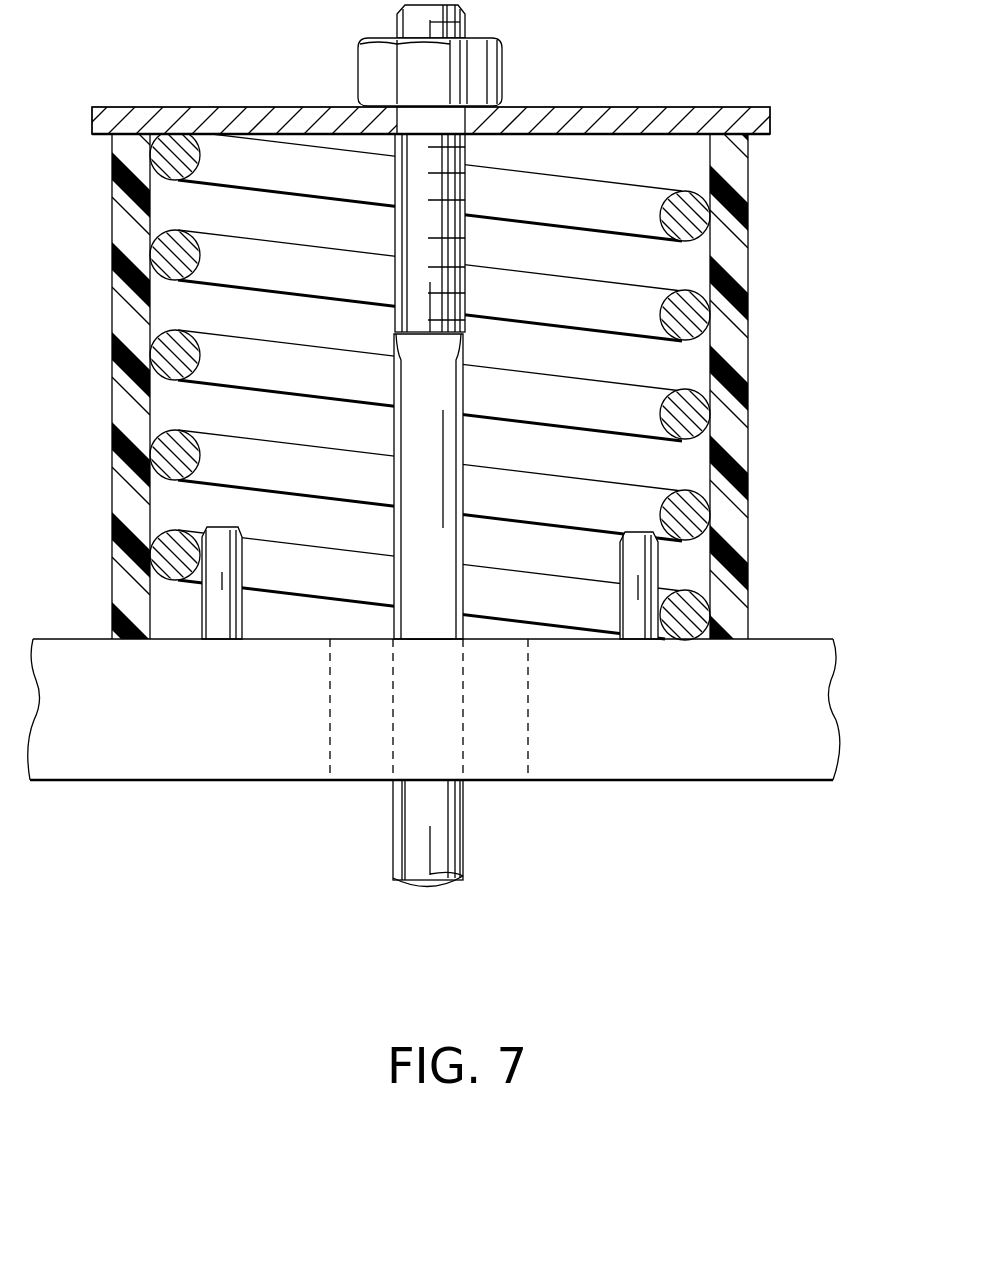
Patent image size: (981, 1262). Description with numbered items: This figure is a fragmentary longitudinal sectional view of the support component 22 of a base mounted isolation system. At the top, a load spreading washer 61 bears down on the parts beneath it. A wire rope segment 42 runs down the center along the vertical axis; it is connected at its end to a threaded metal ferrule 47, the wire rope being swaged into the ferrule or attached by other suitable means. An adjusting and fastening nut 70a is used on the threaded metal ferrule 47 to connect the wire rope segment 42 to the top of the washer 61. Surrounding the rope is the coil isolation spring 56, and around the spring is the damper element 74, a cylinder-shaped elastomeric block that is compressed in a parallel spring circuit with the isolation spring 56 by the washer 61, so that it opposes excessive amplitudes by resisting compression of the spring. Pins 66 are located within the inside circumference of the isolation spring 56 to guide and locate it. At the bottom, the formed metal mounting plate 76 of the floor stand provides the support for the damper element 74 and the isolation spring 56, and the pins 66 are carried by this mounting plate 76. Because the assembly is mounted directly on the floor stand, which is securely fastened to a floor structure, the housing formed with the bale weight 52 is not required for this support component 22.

The support component 22 is at (786, 354).
The wire rope segment 42 is at (467, 446).
The threaded metal ferrule 47 is at (466, 243).
The bale weight 52 is at (640, 782).
The isolation spring 56 is at (608, 377).
The load spreading washer 61 is at (675, 108).
The pins 66 is at (245, 571).
The adjusting and fastening nut 70a is at (503, 60).
The damper element 74 is at (750, 240).
The mounting plate 76 is at (439, 716).